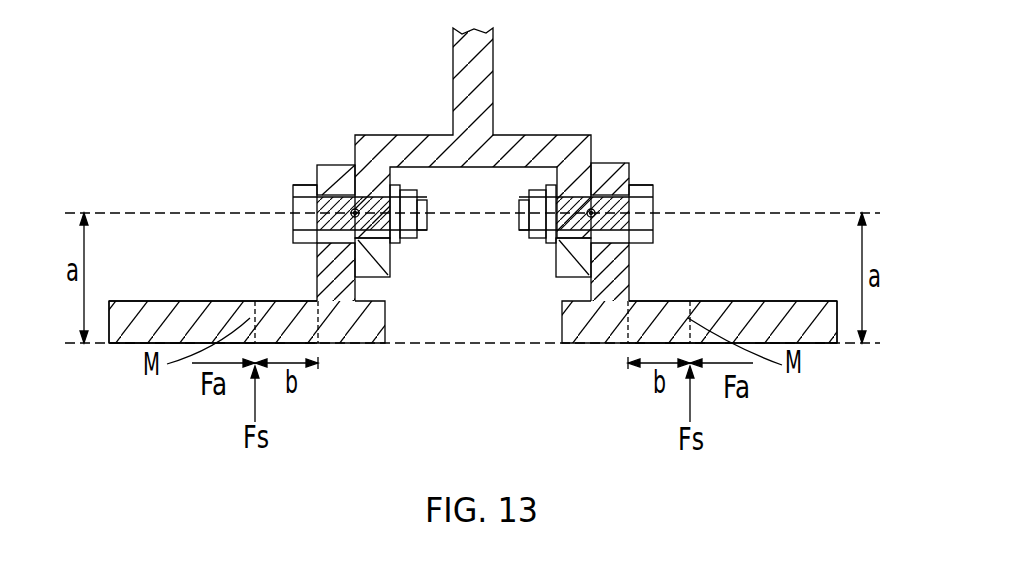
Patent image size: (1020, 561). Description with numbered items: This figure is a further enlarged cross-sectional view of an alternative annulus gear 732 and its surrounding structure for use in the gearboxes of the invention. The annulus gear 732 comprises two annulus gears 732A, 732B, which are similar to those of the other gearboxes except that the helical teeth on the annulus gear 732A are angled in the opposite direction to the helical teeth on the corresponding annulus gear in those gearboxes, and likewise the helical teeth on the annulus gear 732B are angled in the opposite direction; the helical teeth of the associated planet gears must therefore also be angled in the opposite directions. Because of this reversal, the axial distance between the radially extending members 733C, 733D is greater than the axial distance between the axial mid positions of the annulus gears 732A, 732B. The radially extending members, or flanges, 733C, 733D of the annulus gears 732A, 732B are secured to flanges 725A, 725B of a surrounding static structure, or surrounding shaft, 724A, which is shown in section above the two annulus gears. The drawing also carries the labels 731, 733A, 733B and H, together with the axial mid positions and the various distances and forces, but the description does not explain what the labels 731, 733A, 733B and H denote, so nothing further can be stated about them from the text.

The surrounding static structure 724A is at (565, 142).
The flange 725A is at (375, 245).
The flange 725B is at (583, 256).
The base plate 731 is at (137, 343).
The annulus gear 732 is at (502, 296).
The annulus gear 732A is at (264, 334).
The annulus gear 732B is at (699, 331).
The spacer 733A is at (317, 275).
The spacer 733B is at (628, 272).
The radially extending member 733C is at (333, 175).
The radially extending member 733D is at (641, 142).
The hole H is at (317, 186).